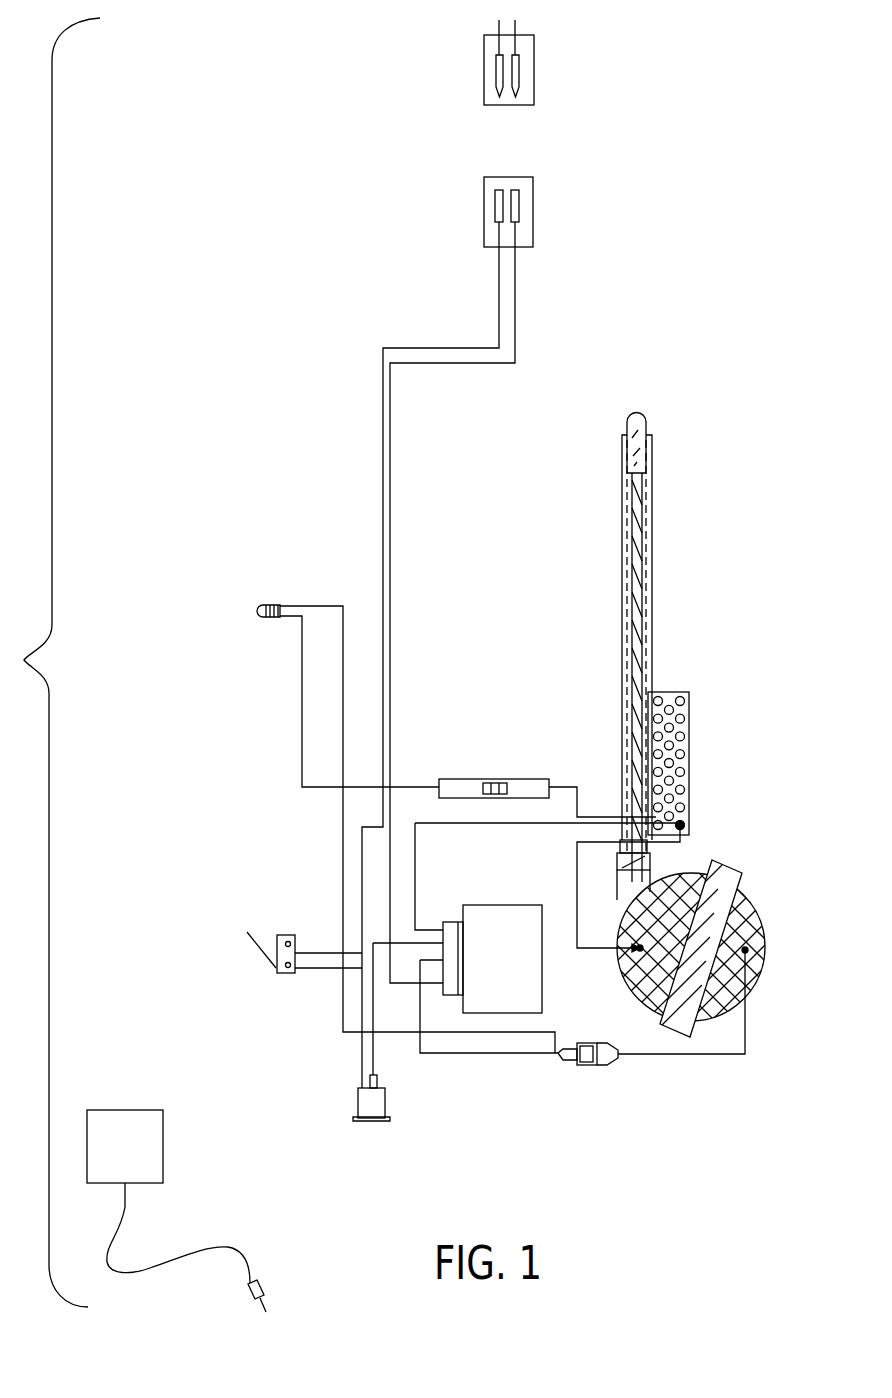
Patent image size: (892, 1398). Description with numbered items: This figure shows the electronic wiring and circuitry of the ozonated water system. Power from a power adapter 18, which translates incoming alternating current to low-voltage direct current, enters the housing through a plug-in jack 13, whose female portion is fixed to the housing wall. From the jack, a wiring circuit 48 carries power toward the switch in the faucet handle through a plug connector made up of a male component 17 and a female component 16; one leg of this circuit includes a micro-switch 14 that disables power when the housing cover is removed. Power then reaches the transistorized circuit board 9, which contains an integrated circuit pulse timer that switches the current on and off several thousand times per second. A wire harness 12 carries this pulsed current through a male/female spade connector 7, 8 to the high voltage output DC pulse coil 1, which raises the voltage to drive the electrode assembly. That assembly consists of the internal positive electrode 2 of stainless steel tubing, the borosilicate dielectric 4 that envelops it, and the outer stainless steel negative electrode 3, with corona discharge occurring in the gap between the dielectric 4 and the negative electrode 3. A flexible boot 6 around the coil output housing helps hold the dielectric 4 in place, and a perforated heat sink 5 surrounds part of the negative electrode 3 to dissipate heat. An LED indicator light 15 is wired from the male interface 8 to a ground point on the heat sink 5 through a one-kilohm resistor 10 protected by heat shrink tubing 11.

The high voltage output DC pulse coil 1 is at (762, 951).
The positive electrode 2 is at (641, 586).
The negative electrode 3 is at (653, 506).
The dielectric 4 is at (640, 414).
The heat sink 5 is at (690, 770).
The flexible boot 6 is at (652, 866).
The spade connector 7 is at (600, 1066).
The male interface of spade connector 8 is at (562, 1062).
The transistorized circuit board 9 is at (505, 1014).
The 1K resistor 10 is at (496, 783).
The heat shrink tubing 11 is at (462, 780).
The wire harness 12 is at (452, 996).
The plug-in jack 13 is at (370, 1122).
The micro-switch 14 is at (284, 975).
The LED indicator light 15 is at (262, 619).
The female plug connector component 16 is at (534, 214).
The male plug connector component 17 is at (535, 73).
The power adapter 18 is at (137, 1108).
The wiring circuit 48 is at (364, 1083).